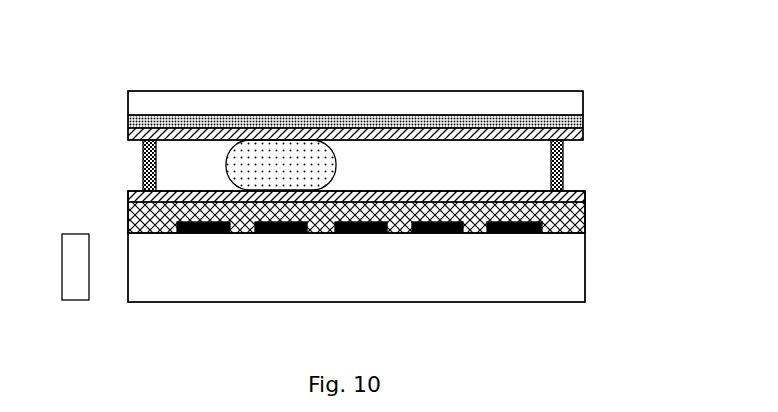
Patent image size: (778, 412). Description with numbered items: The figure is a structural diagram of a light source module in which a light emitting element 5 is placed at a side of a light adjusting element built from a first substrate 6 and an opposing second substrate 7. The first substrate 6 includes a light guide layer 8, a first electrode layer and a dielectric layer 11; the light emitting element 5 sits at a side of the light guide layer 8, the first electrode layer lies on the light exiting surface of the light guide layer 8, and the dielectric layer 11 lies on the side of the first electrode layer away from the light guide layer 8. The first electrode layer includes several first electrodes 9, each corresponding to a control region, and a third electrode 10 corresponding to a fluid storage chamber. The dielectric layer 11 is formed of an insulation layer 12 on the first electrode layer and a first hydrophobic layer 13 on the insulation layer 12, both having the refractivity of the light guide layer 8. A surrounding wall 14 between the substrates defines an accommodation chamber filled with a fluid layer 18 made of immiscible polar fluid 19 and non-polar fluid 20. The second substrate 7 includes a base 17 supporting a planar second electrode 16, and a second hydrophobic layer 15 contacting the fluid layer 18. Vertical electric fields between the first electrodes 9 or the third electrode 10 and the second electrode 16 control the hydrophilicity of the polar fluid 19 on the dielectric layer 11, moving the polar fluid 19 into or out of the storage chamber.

The light emitting element 5 is at (65, 262).
The first substrate 6 is at (92, 220).
The second substrate 7 is at (92, 117).
The light guide layer 8 is at (565, 272).
The first electrode 9 is at (205, 233).
The third electrode 10 is at (522, 233).
The dielectric layer 11 is at (647, 170).
The insulation layer 12 is at (558, 208).
The first hydrophobic layer 13 is at (558, 193).
The surrounding wall 14 is at (562, 163).
The second hydrophobic layer 15 is at (568, 133).
The second electrode 16 is at (568, 119).
The base 17 is at (568, 100).
The fluid layer 18 is at (343, 40).
The polar fluid 19 is at (272, 158).
The non-polar fluid 20 is at (352, 162).